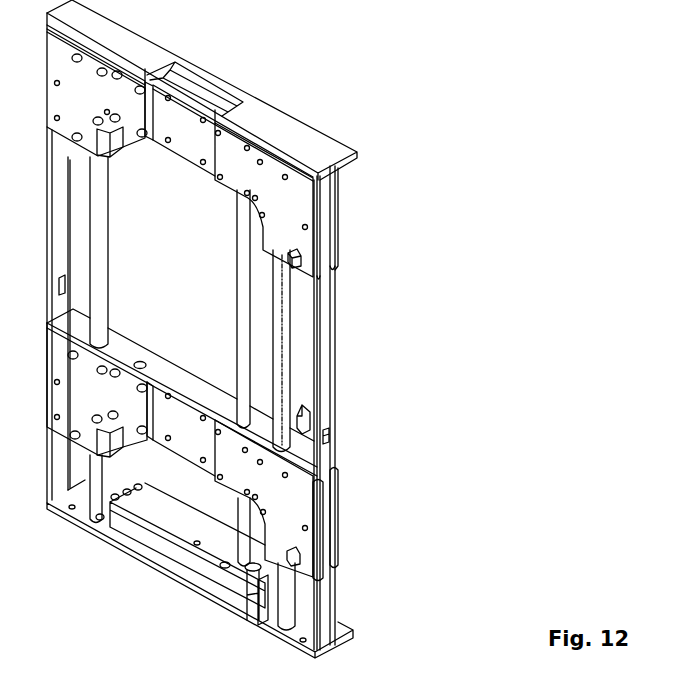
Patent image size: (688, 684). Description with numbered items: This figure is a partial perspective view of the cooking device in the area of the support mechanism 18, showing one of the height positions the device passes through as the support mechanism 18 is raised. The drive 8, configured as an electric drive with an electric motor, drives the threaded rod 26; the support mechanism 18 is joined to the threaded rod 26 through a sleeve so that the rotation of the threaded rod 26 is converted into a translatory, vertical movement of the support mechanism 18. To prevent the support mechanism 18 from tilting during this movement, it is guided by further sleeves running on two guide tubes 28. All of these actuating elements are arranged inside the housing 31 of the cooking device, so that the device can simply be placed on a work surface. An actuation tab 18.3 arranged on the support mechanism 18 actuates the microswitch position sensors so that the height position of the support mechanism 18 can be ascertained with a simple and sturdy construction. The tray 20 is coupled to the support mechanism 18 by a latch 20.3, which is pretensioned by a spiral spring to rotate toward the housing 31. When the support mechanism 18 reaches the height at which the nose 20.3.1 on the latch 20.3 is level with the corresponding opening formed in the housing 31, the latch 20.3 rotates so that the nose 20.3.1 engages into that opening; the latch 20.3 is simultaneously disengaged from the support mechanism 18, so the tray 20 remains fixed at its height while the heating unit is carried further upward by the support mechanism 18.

The support mechanism 18 is at (298, 208).
The actuation tab 18.3 is at (300, 253).
The threaded rod 26 is at (242, 285).
The guide tubes 28 is at (280, 350).
The housing 31 is at (332, 369).
The tray 20 is at (285, 525).
The latch 20.3 is at (304, 420).
The nose 20.3.1 is at (331, 431).
The drive 8 is at (235, 583).